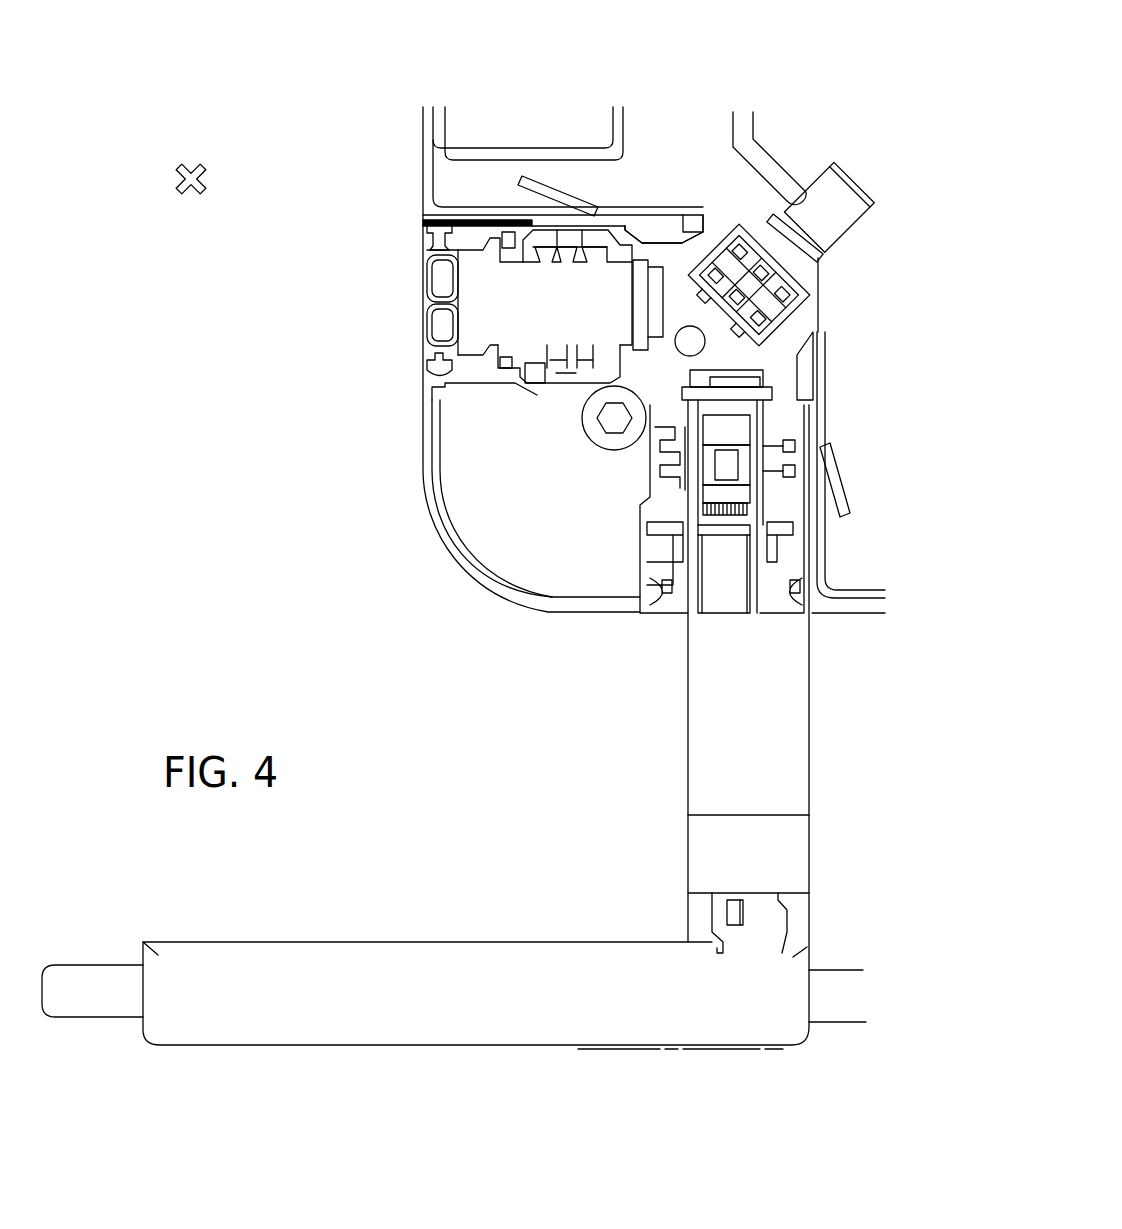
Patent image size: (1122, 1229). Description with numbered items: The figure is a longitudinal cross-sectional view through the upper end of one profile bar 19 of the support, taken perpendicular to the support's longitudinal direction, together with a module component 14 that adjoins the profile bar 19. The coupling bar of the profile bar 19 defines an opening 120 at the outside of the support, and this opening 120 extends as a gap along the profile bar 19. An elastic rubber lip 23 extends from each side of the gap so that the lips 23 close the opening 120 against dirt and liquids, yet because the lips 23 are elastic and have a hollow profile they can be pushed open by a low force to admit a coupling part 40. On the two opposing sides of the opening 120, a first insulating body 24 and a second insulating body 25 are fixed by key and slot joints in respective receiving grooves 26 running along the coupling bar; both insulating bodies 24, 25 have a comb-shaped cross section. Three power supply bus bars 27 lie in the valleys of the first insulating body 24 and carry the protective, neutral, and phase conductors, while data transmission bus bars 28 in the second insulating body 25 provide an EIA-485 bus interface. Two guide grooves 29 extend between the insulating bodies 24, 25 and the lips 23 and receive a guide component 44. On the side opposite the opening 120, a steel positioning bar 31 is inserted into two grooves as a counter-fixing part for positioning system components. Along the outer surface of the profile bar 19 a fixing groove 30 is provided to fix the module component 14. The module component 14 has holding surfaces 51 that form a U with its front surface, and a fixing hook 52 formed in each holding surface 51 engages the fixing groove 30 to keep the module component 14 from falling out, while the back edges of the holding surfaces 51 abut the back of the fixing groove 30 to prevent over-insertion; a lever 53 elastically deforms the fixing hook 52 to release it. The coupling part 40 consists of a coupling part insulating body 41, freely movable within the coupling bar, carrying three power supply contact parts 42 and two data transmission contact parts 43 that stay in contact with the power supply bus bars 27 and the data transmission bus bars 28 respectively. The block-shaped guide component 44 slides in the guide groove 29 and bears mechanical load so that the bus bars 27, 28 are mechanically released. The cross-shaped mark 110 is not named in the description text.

The module component 14 is at (421, 159).
The reference mark 110 is at (179, 187).
The lever 53 is at (521, 177).
The fixing hook 52 is at (643, 214).
The holding surface 51 is at (685, 210).
The receiving groove 26 is at (592, 226).
The first insulating body 24 is at (515, 245).
The lip 23 is at (426, 281).
The opening 120 is at (484, 298).
The power supply bus bar 27 is at (515, 238).
The guide groove 29 is at (509, 368).
The positioning bar 31 is at (643, 329).
The fixing groove 30 is at (742, 250).
The coupling part insulating body 41 is at (782, 264).
The power supply contact part 42 is at (802, 284).
The data transmission contact part 43 is at (794, 177).
The guide component 44 is at (821, 172).
The second insulating body 25 is at (529, 385).
The data transmission bus bar 28 is at (565, 397).
The profile bar 19 is at (474, 579).
The coupling part 40 is at (693, 528).